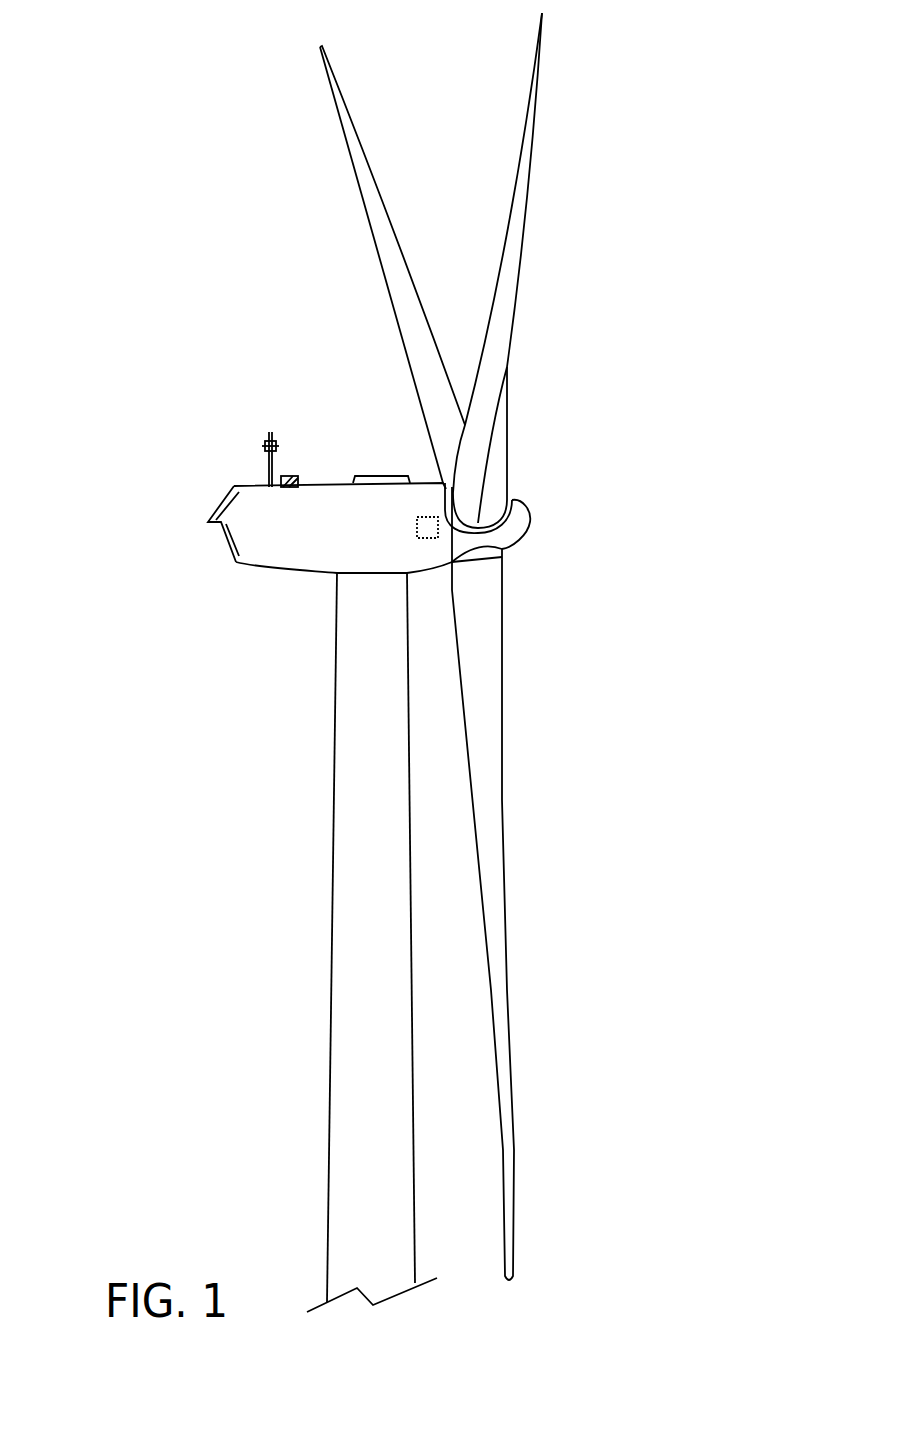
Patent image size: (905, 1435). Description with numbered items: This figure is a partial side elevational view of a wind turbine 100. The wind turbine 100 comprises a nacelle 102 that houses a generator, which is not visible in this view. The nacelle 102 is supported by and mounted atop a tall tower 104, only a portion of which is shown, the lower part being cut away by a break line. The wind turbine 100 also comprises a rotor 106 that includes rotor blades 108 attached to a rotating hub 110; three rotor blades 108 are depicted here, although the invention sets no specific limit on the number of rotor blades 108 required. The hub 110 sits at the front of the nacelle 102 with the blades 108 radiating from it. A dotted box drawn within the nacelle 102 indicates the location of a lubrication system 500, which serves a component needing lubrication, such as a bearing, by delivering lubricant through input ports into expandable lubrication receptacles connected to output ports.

The wind turbine 100 is at (178, 235).
The nacelle 102 is at (290, 567).
The tower 104 is at (333, 805).
The rotor 106 is at (600, 268).
The rotor blades 108 is at (349, 117).
The rotating hub 110 is at (523, 537).
The lubrication system 500 is at (414, 528).